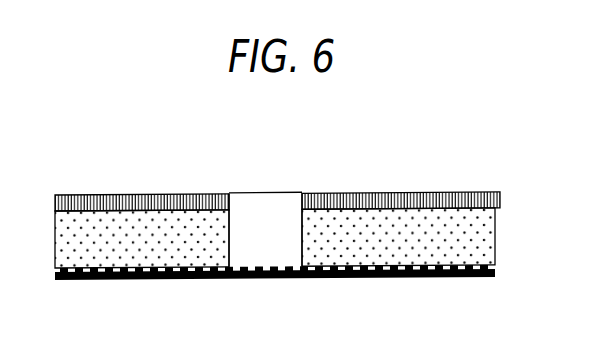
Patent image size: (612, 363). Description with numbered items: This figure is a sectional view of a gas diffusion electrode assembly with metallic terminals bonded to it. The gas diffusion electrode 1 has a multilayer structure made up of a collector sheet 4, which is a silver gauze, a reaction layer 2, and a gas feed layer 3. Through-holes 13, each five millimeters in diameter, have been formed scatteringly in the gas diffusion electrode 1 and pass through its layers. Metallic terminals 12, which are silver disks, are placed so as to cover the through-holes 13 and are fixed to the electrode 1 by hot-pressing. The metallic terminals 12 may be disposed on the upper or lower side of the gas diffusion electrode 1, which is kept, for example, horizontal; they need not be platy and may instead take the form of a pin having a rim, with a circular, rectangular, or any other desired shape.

The gas diffusion electrode 1 is at (308, 232).
The reaction layer 2 is at (500, 197).
The gas feed layer 3 is at (496, 242).
The collector sheet 4 is at (275, 305).
The metallic terminal 12 is at (262, 281).
The through-hole 13 is at (288, 214).